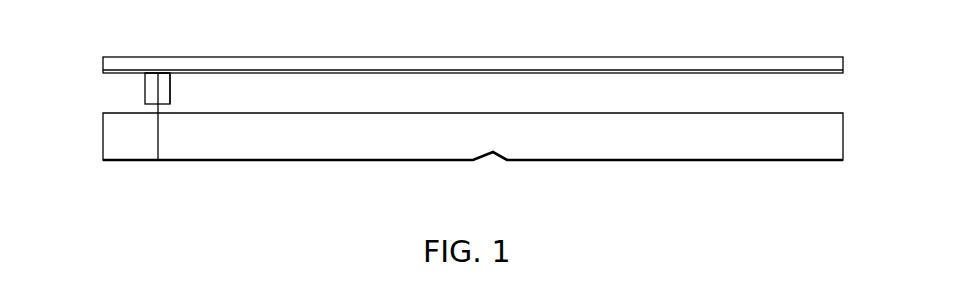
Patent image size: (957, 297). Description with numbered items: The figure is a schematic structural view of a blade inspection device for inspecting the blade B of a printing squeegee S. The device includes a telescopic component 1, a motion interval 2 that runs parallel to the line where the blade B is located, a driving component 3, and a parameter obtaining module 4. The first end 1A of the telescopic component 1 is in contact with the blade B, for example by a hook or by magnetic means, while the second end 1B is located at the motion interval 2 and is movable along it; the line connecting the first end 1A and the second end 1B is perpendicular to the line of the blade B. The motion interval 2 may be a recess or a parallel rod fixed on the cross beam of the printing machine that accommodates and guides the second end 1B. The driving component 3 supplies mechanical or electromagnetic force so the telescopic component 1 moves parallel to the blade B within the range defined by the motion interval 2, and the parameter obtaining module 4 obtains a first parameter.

The telescopic component 1 is at (145, 90).
The first end of the telescopic component 1A is at (158, 159).
The second end of the telescopic component 1B is at (157, 75).
The motion interval 2 is at (807, 58).
The driving component 3 is at (158, 78).
The parameter obtaining module 4 is at (172, 97).
The printing squeegee S is at (355, 147).
The blade B is at (430, 160).